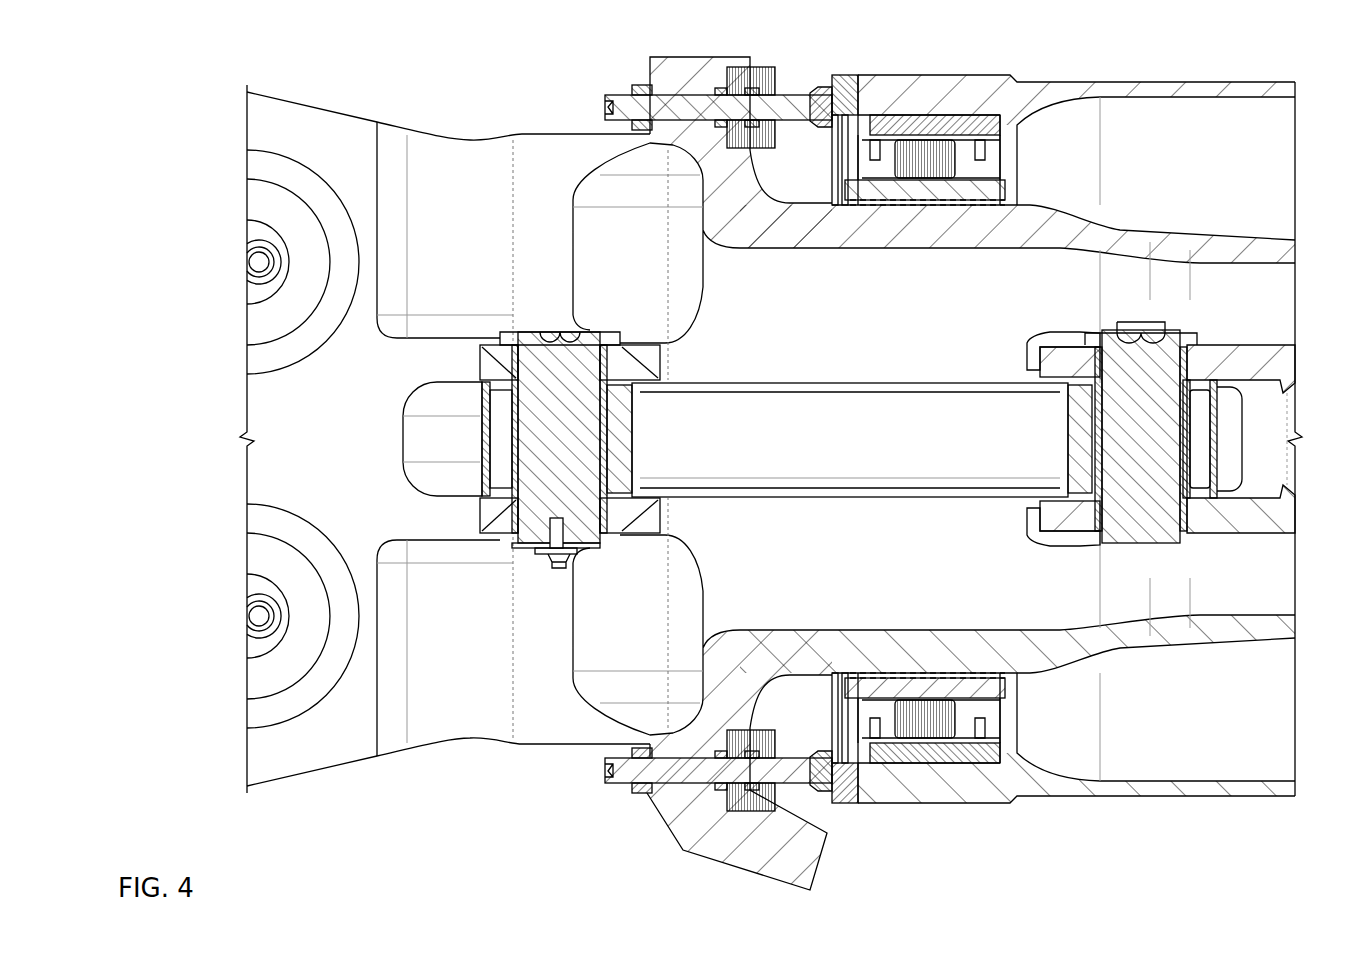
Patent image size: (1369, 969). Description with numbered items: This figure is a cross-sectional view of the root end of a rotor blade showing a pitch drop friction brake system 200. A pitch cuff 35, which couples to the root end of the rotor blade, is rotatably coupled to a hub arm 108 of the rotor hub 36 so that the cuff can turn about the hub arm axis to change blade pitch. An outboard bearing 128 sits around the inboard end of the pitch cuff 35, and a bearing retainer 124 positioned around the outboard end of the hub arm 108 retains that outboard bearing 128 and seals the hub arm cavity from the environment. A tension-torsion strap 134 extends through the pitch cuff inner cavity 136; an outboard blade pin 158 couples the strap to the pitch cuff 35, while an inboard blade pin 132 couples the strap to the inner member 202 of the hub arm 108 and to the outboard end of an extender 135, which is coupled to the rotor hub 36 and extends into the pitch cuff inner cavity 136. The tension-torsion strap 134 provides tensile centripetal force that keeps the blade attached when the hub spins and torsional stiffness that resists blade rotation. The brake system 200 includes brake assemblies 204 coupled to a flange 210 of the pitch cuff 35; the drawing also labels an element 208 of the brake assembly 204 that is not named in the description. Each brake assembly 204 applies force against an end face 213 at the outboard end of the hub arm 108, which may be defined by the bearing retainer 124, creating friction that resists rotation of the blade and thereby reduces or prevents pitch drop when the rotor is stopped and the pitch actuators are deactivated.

The pitch drop friction brake system 200 is at (267, 50).
The pitch cuff 35 is at (300, 95).
The rotor hub 36 is at (1146, 82).
The hub arm 108 is at (1105, 797).
The bearing retainer 124 is at (842, 76).
The outboard bearing 128 is at (960, 128).
The inboard blade pin 132 is at (1172, 338).
The tension-torsion strap 134 is at (815, 383).
The extender 135 is at (1255, 536).
The pitch cuff inner cavity 136 is at (1030, 283).
The outboard blade pin 158 is at (555, 330).
The inner member 202 is at (1255, 345).
The brake assembly 204 is at (548, 31).
The bolt 208 is at (663, 93).
The flange 210 is at (708, 57).
The end face 213 is at (822, 86).